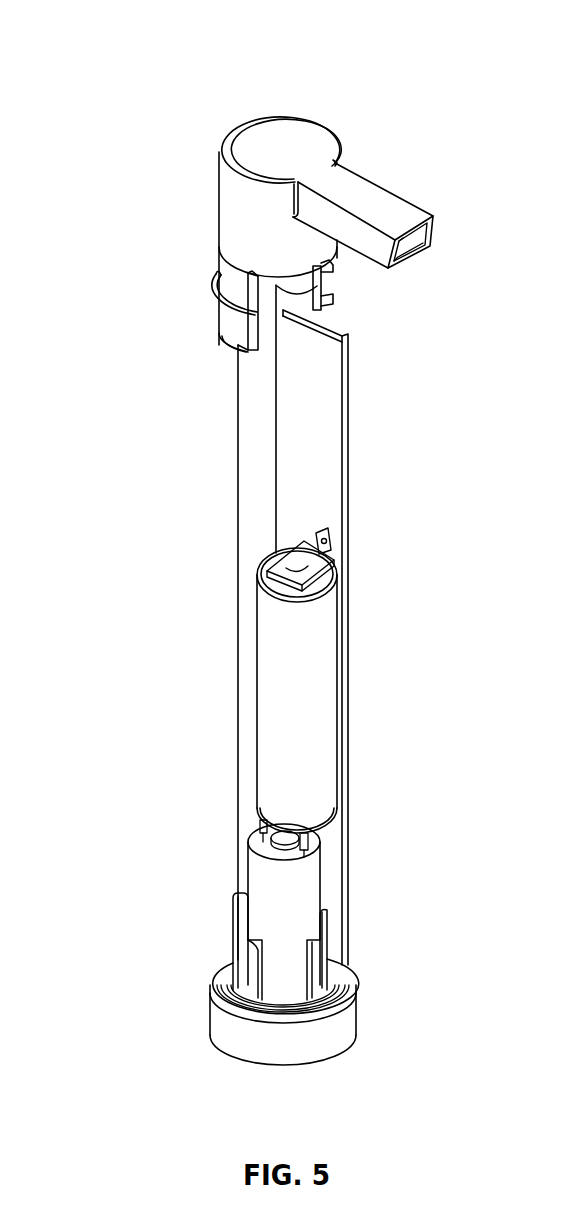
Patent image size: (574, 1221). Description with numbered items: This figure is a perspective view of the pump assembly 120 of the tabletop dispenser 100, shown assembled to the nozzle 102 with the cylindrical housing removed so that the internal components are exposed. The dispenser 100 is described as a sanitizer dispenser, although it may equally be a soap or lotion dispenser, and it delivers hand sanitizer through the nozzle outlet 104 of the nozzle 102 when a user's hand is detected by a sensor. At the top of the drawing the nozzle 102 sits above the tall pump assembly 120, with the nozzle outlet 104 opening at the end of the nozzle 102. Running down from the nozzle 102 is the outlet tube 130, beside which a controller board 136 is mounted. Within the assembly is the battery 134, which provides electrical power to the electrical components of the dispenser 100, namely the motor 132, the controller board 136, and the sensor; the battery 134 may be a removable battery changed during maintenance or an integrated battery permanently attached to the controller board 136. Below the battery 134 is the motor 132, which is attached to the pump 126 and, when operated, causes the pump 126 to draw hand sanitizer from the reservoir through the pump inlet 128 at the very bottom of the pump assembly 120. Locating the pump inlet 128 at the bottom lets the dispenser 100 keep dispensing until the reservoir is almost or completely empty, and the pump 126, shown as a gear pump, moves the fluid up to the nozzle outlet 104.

The tabletop dispenser 100 is at (97, 62).
The pump assembly 120 is at (130, 192).
The nozzle 102 is at (342, 185).
The nozzle outlet 104 is at (437, 241).
The outlet tube 130 is at (248, 472).
The controller board 136 is at (342, 447).
The battery 134 is at (313, 672).
The motor 132 is at (290, 888).
The pump 126 is at (190, 972).
The pump inlet 128 is at (364, 1045).